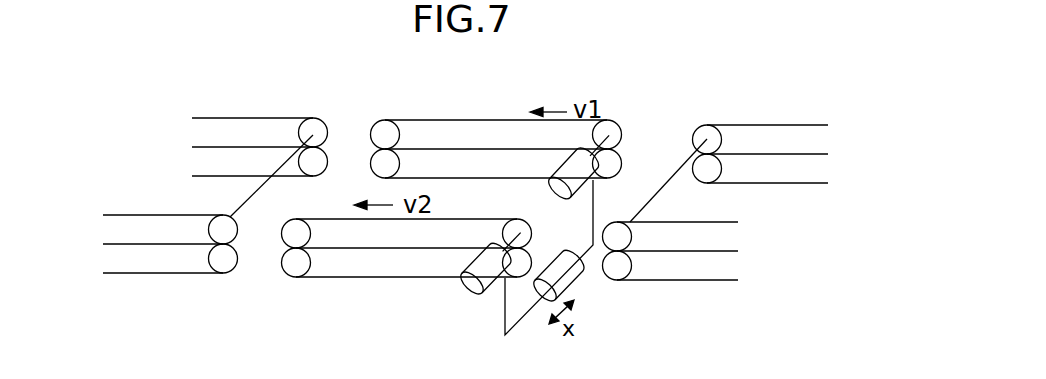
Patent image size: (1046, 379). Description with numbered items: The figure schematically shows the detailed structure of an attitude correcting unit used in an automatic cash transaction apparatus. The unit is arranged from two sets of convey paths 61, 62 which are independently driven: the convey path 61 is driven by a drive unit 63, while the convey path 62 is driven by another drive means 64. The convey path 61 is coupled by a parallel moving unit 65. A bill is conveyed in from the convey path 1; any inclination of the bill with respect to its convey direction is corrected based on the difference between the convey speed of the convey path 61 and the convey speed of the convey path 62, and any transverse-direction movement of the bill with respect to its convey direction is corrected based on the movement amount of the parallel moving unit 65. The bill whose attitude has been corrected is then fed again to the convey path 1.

The convey path 1 is at (251, 118).
The convey path 61 is at (476, 118).
The convey path 62 is at (352, 277).
The drive unit 63 is at (553, 191).
The drive means 64 is at (471, 297).
The parallel moving unit 65 is at (570, 285).